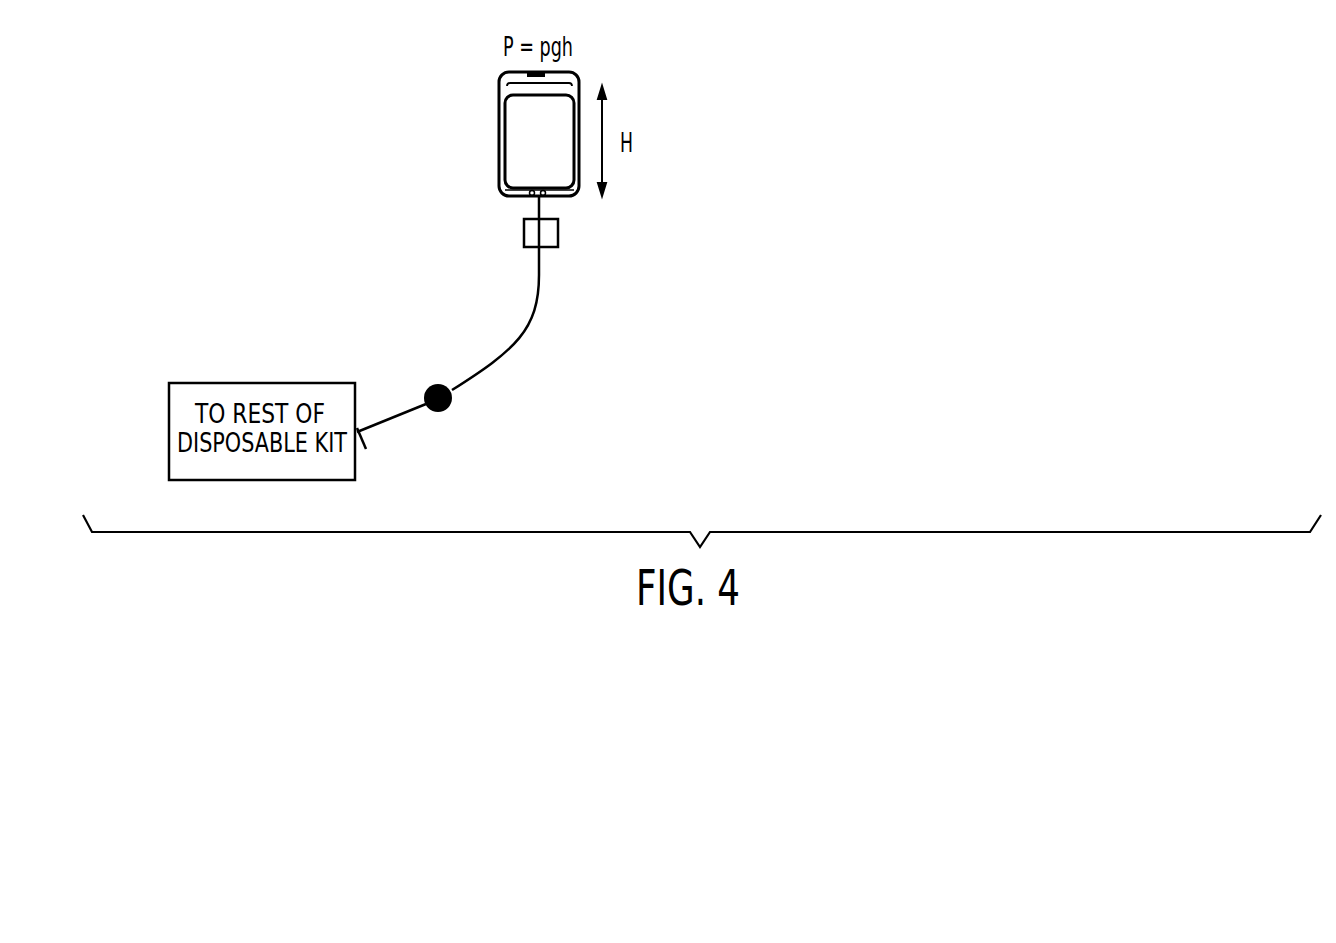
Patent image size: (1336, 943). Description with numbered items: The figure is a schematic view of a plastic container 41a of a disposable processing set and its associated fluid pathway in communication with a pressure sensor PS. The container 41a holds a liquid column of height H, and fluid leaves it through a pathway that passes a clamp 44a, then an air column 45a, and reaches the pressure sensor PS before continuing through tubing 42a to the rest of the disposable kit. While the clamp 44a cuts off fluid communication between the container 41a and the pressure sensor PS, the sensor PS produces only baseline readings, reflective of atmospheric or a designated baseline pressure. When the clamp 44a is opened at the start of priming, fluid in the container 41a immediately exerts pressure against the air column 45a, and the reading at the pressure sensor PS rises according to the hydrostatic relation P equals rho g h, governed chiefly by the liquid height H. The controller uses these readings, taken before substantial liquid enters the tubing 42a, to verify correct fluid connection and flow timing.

The container 41a is at (500, 140).
The clamp 44a is at (524, 229).
The air column 45a is at (527, 323).
The tubing 42a is at (400, 420).
The pressure sensor PS is at (450, 408).